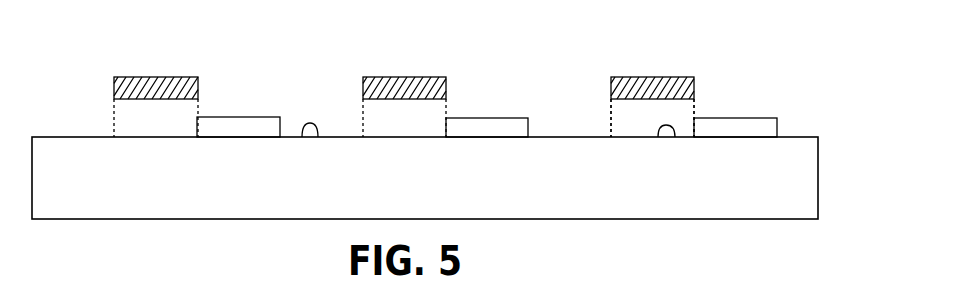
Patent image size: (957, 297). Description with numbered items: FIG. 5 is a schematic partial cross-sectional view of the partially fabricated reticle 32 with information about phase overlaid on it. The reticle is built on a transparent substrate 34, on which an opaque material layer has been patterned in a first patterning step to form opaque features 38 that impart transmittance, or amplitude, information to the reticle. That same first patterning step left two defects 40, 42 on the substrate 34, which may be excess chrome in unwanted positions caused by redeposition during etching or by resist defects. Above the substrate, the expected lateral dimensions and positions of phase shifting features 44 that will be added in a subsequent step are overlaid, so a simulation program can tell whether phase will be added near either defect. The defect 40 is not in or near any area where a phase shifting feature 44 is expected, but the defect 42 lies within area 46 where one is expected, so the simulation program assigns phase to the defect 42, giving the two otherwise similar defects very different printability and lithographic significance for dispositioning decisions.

The partially fabricated reticle 32 is at (757, 37).
The substrate 34 is at (818, 180).
The opaque features 38 is at (778, 129).
The defect 40 is at (307, 123).
The defect 42 is at (673, 127).
The phase shifting features 44 is at (168, 77).
The area 46 is at (622, 120).